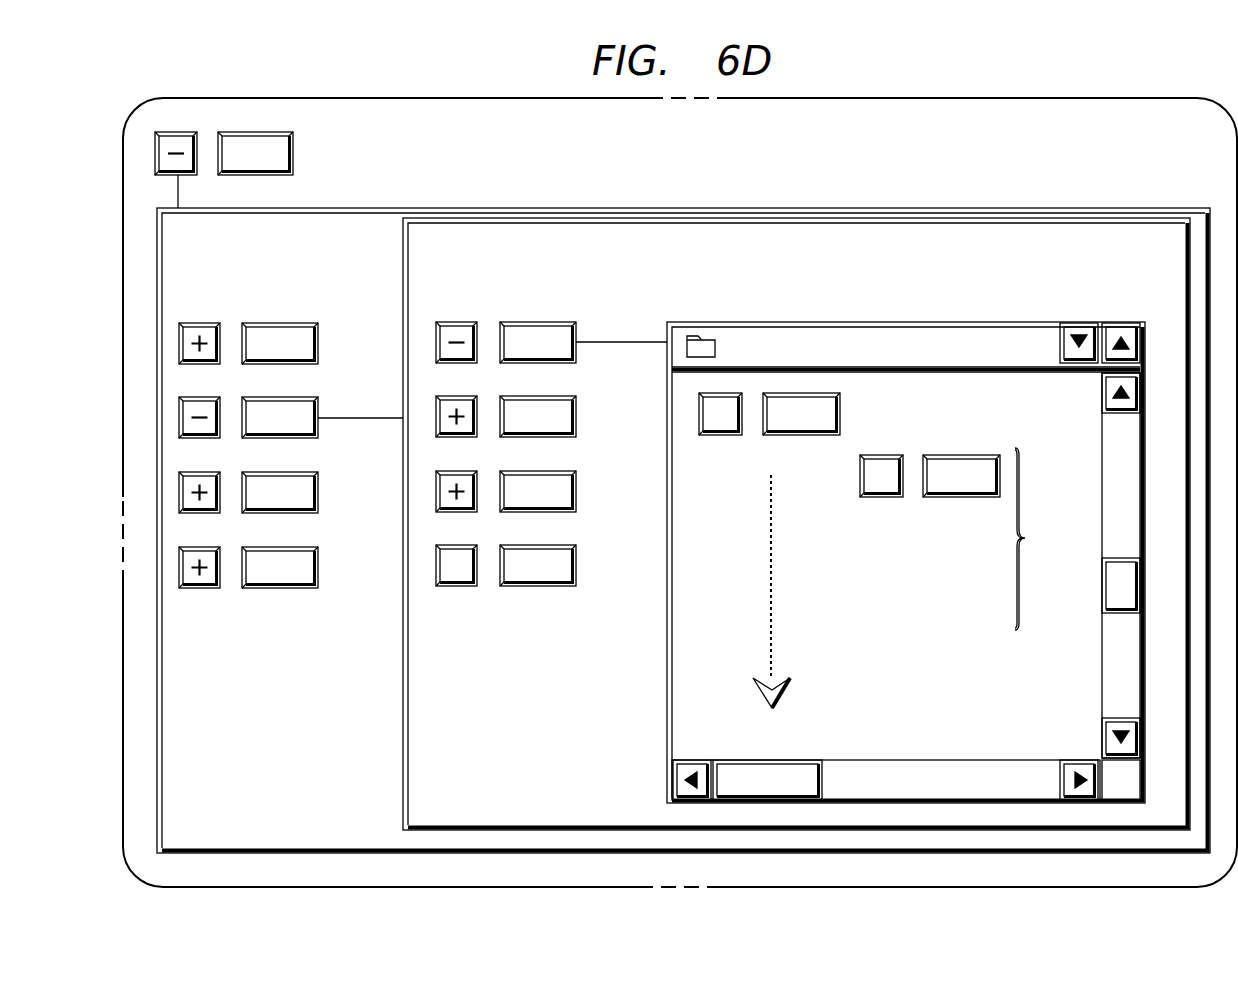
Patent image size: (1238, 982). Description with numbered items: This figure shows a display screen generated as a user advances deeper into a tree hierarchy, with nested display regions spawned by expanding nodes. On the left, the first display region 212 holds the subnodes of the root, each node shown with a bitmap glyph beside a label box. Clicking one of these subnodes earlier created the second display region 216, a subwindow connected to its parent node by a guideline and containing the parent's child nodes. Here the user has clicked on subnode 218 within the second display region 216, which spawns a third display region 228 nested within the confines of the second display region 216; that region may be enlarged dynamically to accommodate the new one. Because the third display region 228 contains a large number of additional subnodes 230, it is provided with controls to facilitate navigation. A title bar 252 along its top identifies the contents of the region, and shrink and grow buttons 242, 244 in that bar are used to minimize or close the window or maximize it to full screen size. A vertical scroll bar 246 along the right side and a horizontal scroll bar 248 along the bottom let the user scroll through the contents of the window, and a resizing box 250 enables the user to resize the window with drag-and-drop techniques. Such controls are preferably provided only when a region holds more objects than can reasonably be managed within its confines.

The first display region 212 is at (260, 686).
The second display region 216 is at (518, 686).
The subnode 218 is at (618, 340).
The third display region 228 is at (1075, 765).
The additional subnodes 230 is at (966, 539).
The shrink button 242 is at (1076, 333).
The grow button 244 is at (1130, 333).
The vertical scroll bar 246 is at (1112, 440).
The horizontal scroll bar 248 is at (870, 768).
The resizing box 250 is at (667, 713).
The title bar 252 is at (784, 334).